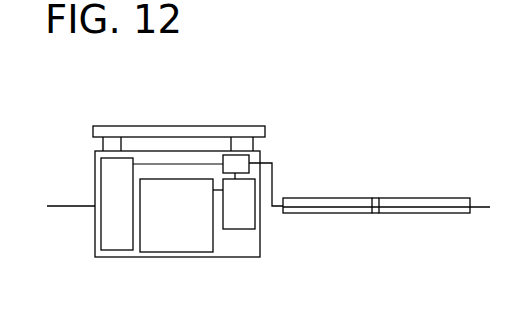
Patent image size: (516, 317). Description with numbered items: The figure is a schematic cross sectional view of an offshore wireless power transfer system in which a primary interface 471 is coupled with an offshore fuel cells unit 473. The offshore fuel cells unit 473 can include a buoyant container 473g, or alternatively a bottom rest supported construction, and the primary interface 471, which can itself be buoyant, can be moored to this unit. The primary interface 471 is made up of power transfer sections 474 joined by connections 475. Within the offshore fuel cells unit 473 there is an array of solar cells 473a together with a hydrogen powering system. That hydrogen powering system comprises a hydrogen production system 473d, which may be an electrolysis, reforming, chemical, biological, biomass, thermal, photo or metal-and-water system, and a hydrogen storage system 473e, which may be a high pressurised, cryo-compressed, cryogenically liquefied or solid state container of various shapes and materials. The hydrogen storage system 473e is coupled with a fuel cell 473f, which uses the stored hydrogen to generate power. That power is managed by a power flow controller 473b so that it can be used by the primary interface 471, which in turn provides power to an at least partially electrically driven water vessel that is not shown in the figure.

The primary interface 471 is at (438, 188).
The offshore fuel cells unit 473 is at (293, 138).
The array of solar cells 473a is at (120, 126).
The power flow controller 473b is at (223, 155).
The hydrogen production system 473d is at (118, 250).
The hydrogen storage system 473e is at (178, 252).
The fuel cell 473f is at (240, 229).
The buoyant container 473g is at (260, 245).
The power transfer sections 474 is at (322, 198).
The connections 475 is at (377, 198).